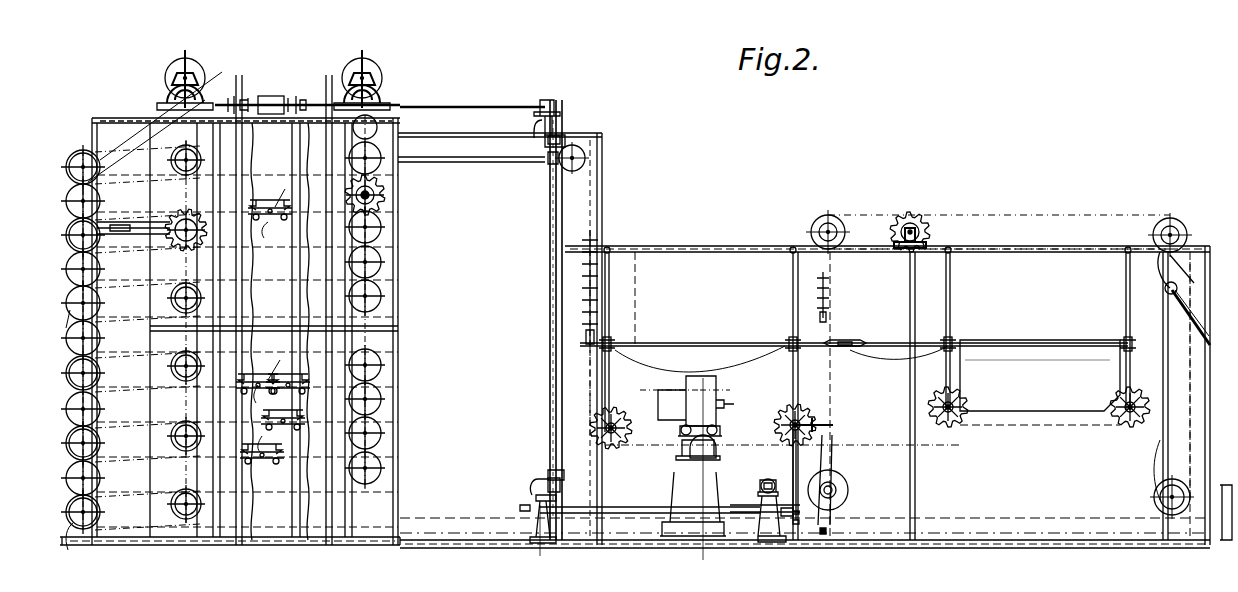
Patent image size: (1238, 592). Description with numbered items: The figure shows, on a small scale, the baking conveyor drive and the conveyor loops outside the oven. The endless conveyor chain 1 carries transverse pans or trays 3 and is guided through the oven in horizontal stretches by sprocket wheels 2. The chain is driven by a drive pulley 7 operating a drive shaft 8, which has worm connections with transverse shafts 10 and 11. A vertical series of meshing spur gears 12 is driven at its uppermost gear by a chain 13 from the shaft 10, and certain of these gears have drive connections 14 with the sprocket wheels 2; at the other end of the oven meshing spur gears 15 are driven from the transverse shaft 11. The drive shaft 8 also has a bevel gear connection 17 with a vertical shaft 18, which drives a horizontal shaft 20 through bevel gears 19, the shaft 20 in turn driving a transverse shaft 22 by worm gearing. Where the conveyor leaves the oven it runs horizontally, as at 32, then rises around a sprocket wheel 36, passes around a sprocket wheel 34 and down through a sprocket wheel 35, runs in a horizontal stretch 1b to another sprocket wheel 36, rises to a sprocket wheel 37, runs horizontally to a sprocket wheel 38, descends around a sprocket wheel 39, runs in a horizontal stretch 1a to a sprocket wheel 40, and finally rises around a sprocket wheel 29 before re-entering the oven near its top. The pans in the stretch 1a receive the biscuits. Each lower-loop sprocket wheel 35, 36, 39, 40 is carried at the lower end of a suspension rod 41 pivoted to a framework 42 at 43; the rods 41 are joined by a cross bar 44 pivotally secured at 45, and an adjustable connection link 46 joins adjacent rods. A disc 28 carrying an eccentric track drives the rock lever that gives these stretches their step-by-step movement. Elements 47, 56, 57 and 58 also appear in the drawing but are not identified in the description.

The conveyor chain 1 is at (836, 290).
The horizontal stretch 1a is at (736, 450).
The horizontal stretch 1b is at (1080, 426).
The sprocket wheels 2 is at (175, 218).
The pans or trays 3 is at (590, 322).
The drive pulley 7 is at (262, 100).
The drive shaft 8 is at (502, 106).
The transverse shaft 10 is at (206, 72).
The transverse shaft 11 is at (372, 80).
The spur gears 12 is at (229, 552).
The chain 13 is at (132, 102).
The drive connections 14 is at (134, 173).
The spur gears 15 is at (378, 180).
The bevel gear connection 17 is at (558, 106).
The vertical shaft 18 is at (558, 306).
The bevel gears 19 is at (570, 510).
The horizontal shaft 20 is at (628, 522).
The transverse shaft 22 is at (766, 480).
The disc 28 is at (846, 490).
The sprocket wheel 29 is at (590, 170).
The conveyor horizontal portion 32 is at (1000, 520).
The sprocket wheel 34 is at (1166, 226).
The sprocket wheel 35 is at (1124, 428).
The sprocket wheel 36 is at (948, 428).
The sprocket wheel 37 is at (919, 222).
The sprocket wheel 38 is at (812, 226).
The sprocket wheel 39 is at (784, 414).
The sprocket wheel 40 is at (620, 420).
The suspension rod 41 is at (612, 306).
The framework 42 is at (704, 246).
The pivot 43 is at (610, 254).
The cross bar 44 is at (773, 335).
The pivotal connections 45 is at (614, 343).
The adjustable connection link 46 is at (842, 340).
The link 47 is at (820, 354).
The drive chain 56 is at (874, 224).
The chain 57 is at (1180, 450).
The bracket 58 is at (1156, 277).